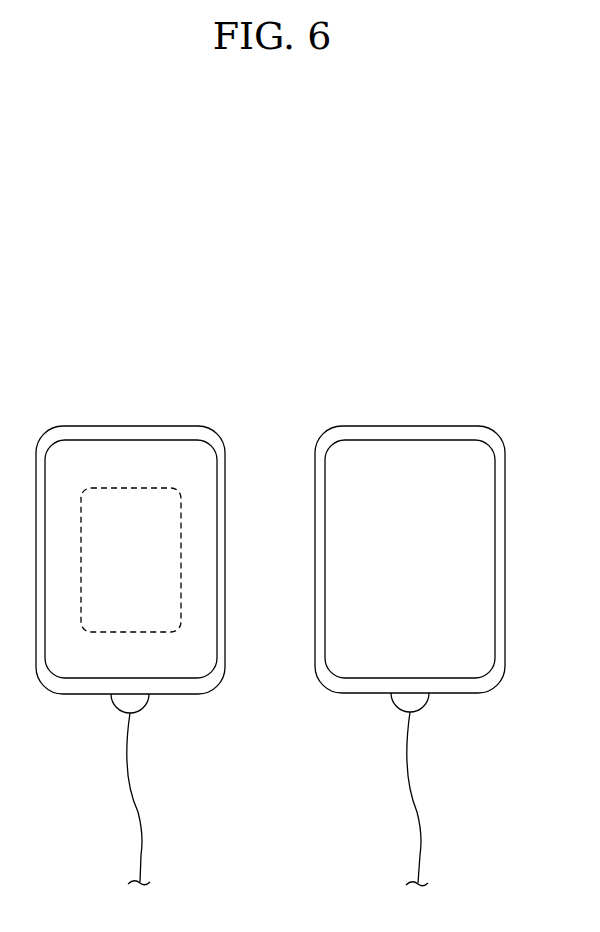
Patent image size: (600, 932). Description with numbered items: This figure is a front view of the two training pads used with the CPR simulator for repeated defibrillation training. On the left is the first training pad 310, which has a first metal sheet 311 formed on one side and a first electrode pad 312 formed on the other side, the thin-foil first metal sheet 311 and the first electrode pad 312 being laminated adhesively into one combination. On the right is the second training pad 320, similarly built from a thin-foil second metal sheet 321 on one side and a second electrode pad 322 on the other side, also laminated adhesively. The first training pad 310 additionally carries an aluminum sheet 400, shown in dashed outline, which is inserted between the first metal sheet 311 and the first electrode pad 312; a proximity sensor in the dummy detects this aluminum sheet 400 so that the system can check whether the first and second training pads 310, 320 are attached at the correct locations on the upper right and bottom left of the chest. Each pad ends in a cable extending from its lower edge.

The first training pad 310 is at (138, 381).
The first metal sheet 311 is at (124, 440).
The first electrode pad 312 is at (70, 431).
The aluminum sheet 400 is at (163, 488).
The second training pad 320 is at (457, 381).
The second metal sheet 321 is at (438, 440).
The second electrode pad 322 is at (387, 432).